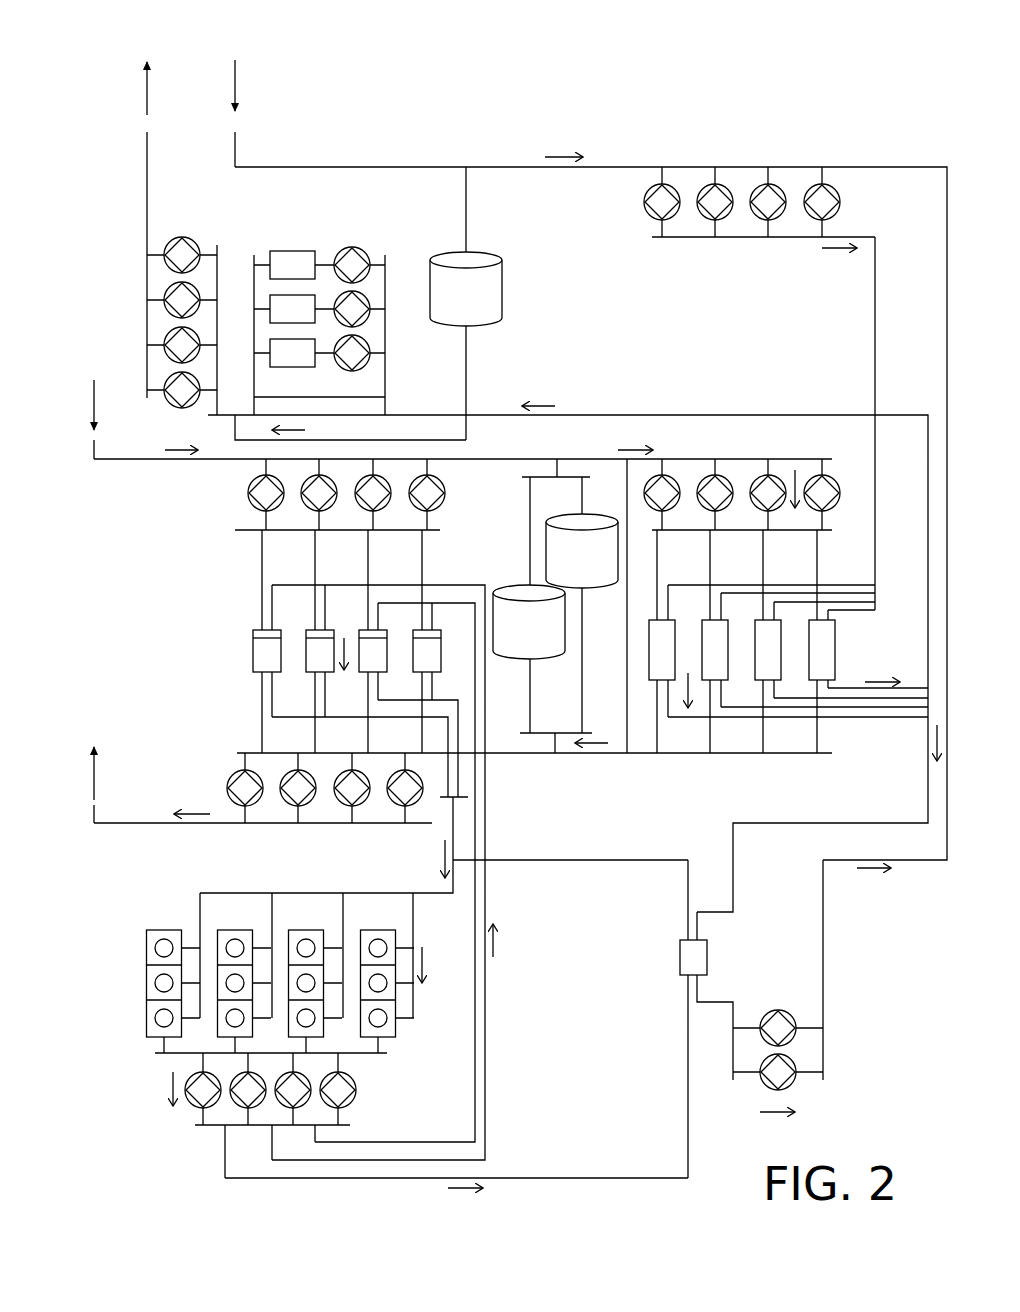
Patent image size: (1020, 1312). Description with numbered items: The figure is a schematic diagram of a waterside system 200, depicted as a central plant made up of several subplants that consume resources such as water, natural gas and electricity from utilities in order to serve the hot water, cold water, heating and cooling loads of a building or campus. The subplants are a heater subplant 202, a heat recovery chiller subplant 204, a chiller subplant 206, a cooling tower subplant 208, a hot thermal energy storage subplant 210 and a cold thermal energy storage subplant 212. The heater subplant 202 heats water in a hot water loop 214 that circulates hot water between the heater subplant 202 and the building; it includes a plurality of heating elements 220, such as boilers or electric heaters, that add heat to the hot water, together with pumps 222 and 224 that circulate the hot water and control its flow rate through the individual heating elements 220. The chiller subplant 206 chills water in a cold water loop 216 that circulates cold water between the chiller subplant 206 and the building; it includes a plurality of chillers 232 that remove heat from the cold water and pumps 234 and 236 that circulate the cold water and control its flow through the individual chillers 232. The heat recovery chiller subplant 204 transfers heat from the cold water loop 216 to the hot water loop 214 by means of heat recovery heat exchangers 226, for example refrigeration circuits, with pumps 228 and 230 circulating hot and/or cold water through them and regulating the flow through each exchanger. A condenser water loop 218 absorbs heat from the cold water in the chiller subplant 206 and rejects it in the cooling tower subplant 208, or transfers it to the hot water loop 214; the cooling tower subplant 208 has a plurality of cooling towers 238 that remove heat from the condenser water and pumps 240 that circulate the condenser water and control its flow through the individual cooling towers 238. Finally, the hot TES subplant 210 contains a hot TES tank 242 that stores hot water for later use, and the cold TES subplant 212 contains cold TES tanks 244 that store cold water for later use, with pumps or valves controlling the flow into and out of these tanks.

The waterside system 200 is at (797, 37).
The heater subplant 202 is at (328, 255).
The heat recovery chiller subplant 204 is at (790, 552).
The chiller subplant 206 is at (362, 809).
The cooling tower subplant 208 is at (248, 1035).
The hot thermal energy storage (TES) subplant 210 is at (518, 246).
The cold thermal energy storage (TES) subplant 212 is at (551, 606).
The hot water loop 214 is at (147, 172).
The cold water loop 216 is at (148, 462).
The condenser water loop 218 is at (675, 1182).
The heating elements 220 is at (283, 250).
The pumps 222 is at (190, 242).
The pumps 224 is at (358, 248).
The heat recovery heat exchangers 226 is at (838, 645).
The pumps 228 is at (838, 487).
The pumps 230 is at (840, 197).
The chillers 232 is at (253, 645).
The pumps 234 is at (228, 780).
The pumps 236 is at (247, 493).
The cooling towers 238 is at (397, 1030).
The pumps 240 is at (355, 1098).
The hot TES tank 242 is at (490, 272).
The cold TES tanks 244 is at (563, 520).